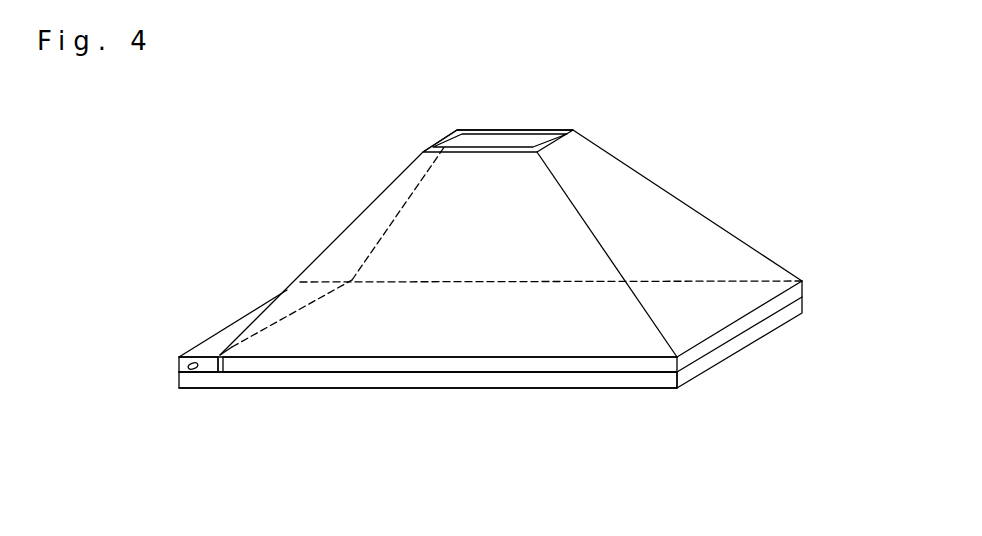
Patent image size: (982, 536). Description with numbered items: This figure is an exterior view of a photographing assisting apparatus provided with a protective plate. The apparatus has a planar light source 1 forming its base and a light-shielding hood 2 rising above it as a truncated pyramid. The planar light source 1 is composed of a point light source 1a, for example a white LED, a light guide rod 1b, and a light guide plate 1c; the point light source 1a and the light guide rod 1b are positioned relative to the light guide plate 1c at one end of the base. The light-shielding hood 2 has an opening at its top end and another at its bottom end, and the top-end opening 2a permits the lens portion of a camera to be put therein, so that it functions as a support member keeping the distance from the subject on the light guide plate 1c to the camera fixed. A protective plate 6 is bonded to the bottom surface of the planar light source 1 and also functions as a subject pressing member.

The planar light source 1 is at (482, 383).
The point light source 1a is at (183, 383).
The light guide rod 1b is at (212, 373).
The light guide plate 1c is at (268, 366).
The light-shielding hood 2 is at (511, 215).
The top-end opening 2a is at (518, 143).
The protective plate 6 is at (450, 380).